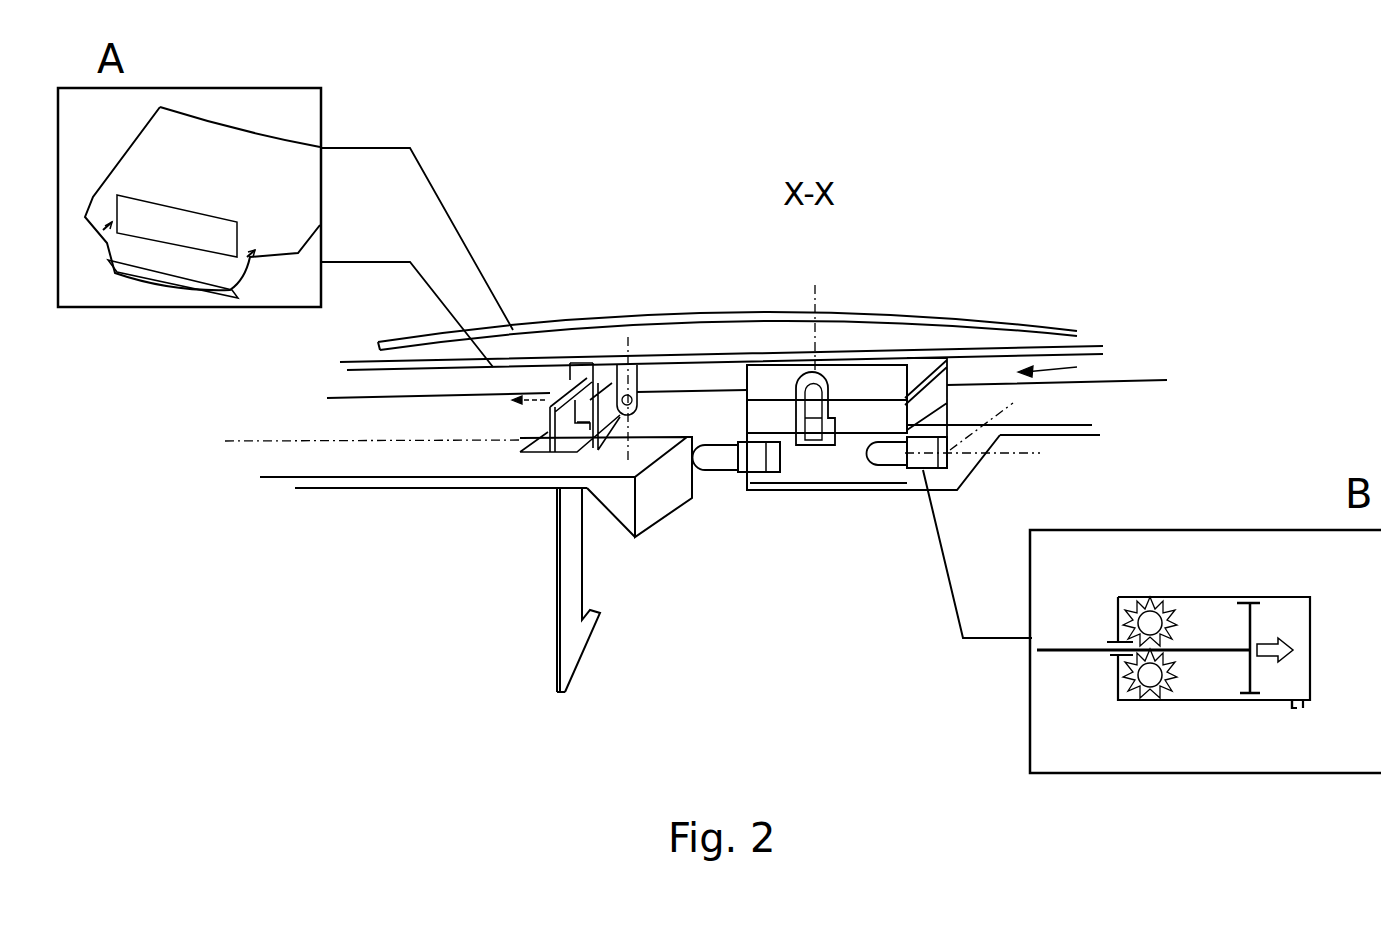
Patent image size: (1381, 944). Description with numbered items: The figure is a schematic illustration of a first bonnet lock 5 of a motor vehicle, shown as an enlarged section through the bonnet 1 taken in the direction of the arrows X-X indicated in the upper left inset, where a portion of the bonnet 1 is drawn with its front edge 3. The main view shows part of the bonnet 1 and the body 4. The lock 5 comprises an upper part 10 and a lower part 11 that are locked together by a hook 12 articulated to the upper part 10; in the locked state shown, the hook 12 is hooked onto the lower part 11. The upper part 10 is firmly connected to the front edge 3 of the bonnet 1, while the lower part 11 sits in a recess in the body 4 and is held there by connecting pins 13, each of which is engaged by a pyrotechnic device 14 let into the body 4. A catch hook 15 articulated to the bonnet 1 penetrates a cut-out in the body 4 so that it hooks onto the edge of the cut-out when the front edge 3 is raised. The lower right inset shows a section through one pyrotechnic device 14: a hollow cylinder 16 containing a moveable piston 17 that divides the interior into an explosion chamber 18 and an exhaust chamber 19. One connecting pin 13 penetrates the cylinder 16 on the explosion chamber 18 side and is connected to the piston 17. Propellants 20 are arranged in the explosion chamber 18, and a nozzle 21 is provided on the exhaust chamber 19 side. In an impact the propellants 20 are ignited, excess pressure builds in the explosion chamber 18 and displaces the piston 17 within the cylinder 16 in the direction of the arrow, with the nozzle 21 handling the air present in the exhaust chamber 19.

The bonnet 1 is at (202, 202).
The front edge 3 is at (727, 288).
The body 4 is at (432, 490).
The lock 5 is at (1108, 362).
The upper part 10 is at (878, 373).
The lower part 11 is at (823, 470).
The hook 12 is at (800, 375).
The connecting pins 13 is at (750, 493).
The pyrotechnic device 14 is at (917, 473).
The catch hook 15 is at (575, 600).
The hollow cylinder 16 is at (1185, 596).
The piston 17 is at (1209, 619).
The explosion chamber 18 is at (1209, 675).
The exhaust chamber 19 is at (1266, 648).
The propellants 20 is at (1150, 684).
The nozzle 21 is at (1298, 708).